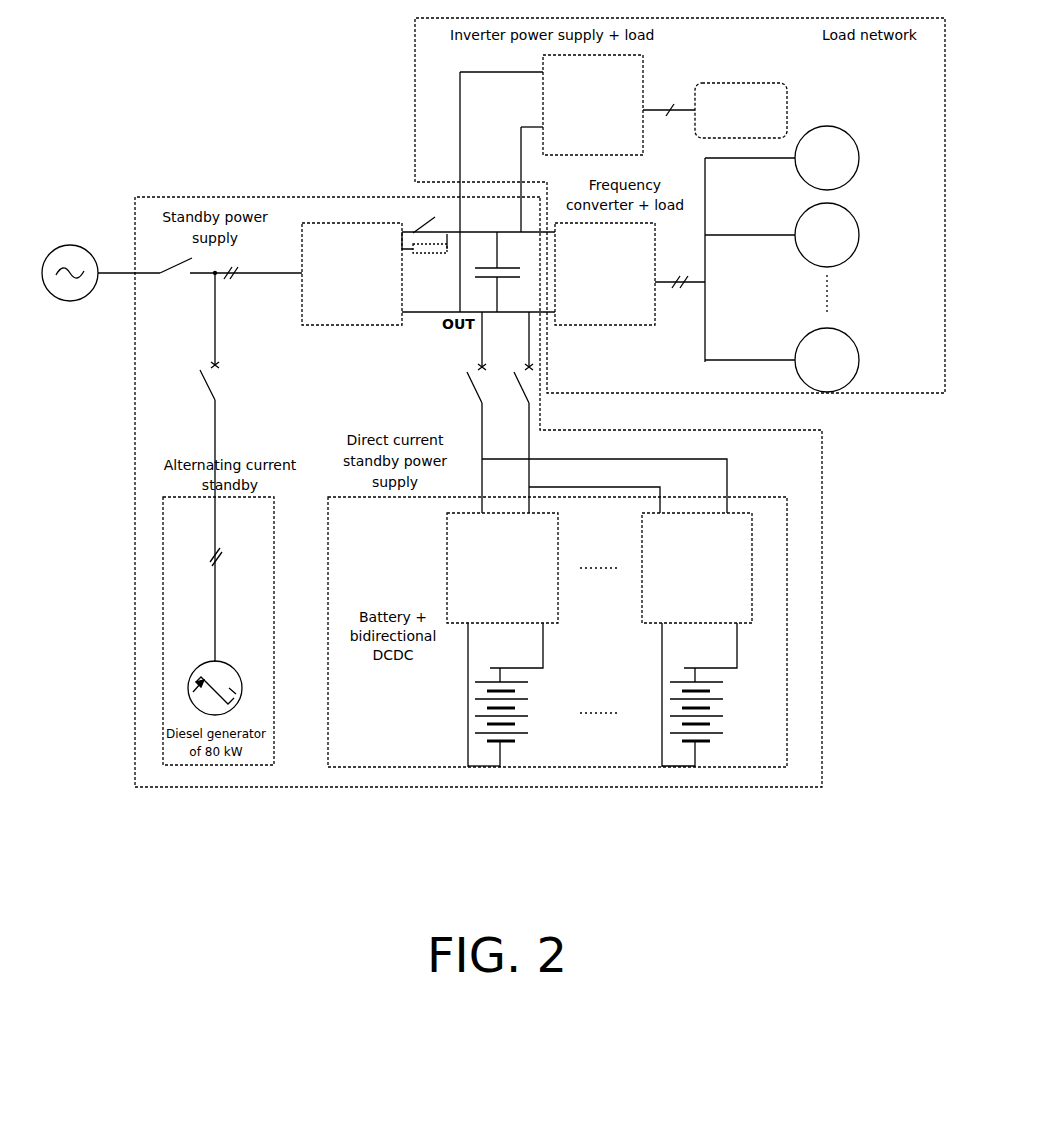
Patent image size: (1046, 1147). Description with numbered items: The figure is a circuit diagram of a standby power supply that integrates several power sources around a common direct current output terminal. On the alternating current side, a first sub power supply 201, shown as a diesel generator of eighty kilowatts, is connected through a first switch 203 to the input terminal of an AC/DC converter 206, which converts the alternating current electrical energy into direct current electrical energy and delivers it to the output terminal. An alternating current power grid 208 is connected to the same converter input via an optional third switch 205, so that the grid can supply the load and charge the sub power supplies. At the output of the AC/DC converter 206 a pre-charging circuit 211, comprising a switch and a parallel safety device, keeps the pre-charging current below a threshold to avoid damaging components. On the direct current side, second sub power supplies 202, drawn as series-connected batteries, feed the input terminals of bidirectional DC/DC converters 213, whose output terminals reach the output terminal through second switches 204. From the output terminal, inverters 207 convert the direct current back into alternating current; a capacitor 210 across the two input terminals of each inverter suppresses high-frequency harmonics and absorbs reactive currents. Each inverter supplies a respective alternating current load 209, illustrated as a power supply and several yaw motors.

The first sub power supply 201 is at (225, 680).
The second sub power supplies 202 is at (615, 695).
The first switch 203 is at (231, 467).
The second switches 204 is at (480, 412).
The third switch 205 is at (231, 278).
The AC/DC converter 206 is at (352, 274).
The inverters 207 is at (624, 190).
The alternating current power grid 208 is at (101, 263).
The alternating current loads 209 is at (819, 223).
The capacitor 210 is at (494, 272).
The pre-charging circuit 211 is at (424, 244).
The DC/DC converters 213 is at (599, 568).